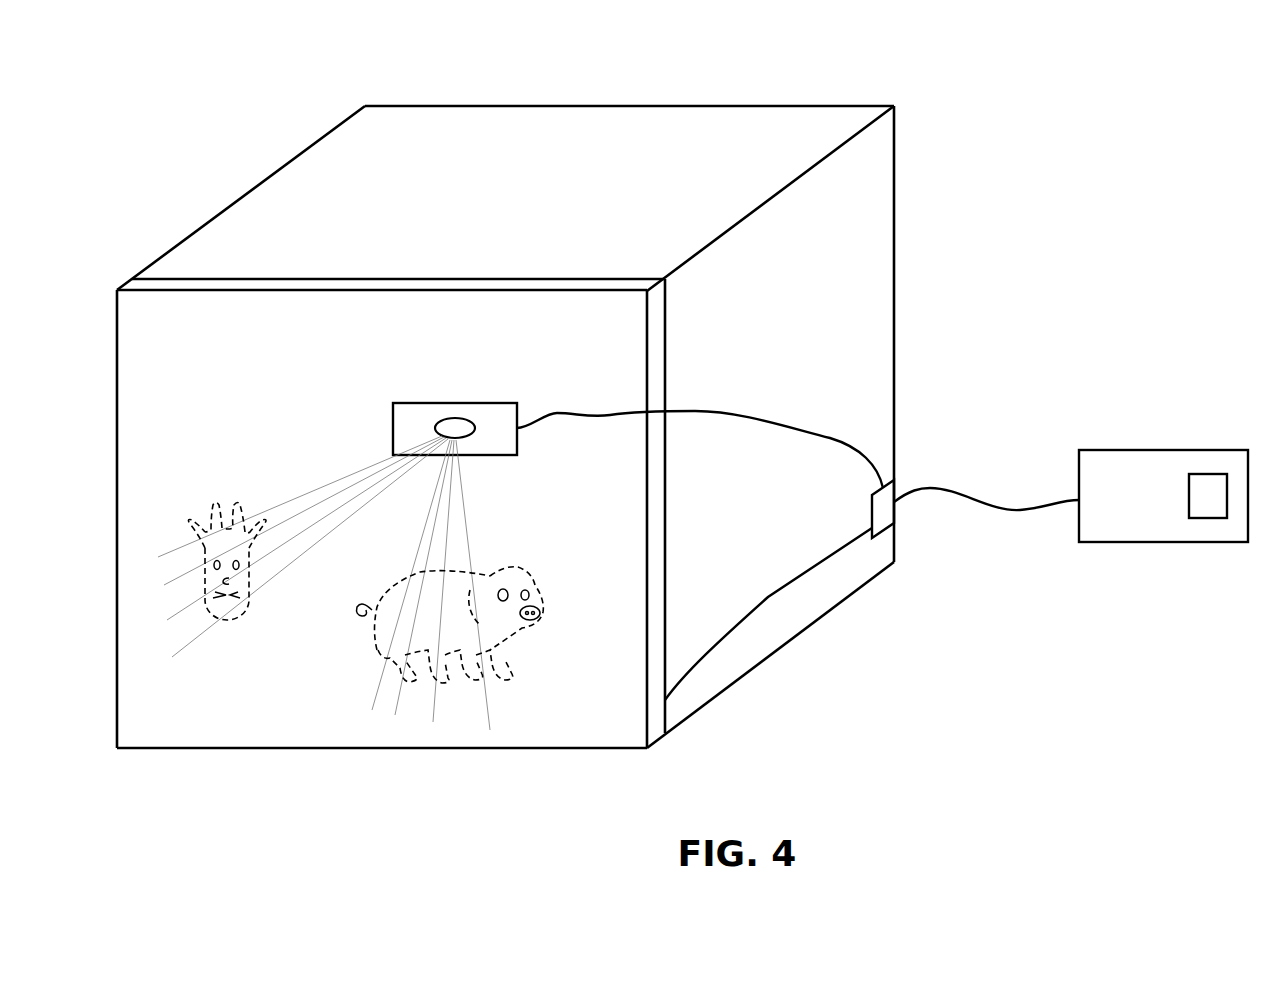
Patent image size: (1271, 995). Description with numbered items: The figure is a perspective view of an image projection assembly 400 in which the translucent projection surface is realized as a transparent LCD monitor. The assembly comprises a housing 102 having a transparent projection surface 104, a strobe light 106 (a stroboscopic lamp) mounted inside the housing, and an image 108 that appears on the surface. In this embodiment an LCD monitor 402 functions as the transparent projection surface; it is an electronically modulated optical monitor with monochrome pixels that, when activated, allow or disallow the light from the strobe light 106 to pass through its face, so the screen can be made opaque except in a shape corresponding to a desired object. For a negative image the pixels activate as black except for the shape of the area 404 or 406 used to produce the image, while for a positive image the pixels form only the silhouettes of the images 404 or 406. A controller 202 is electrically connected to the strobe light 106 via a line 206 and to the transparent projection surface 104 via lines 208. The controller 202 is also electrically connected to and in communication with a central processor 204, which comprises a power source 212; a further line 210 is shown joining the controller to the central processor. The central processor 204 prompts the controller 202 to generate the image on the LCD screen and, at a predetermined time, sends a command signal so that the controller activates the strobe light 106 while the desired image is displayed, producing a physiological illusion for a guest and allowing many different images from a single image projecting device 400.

The image projection assembly 400 is at (248, 165).
The housing 102 is at (846, 105).
The transparent projection surface 104 is at (314, 735).
The strobe light 106 is at (456, 421).
The image 108 is at (542, 620).
The controller 202 is at (867, 505).
The central processor 204 is at (1163, 545).
The line 206 is at (777, 424).
The lines 208 is at (768, 595).
The controller cable 210 is at (1012, 513).
The power source 212 is at (1209, 473).
The LCD monitor 402 is at (647, 713).
The image area 404 is at (397, 590).
The image area 406 is at (213, 500).